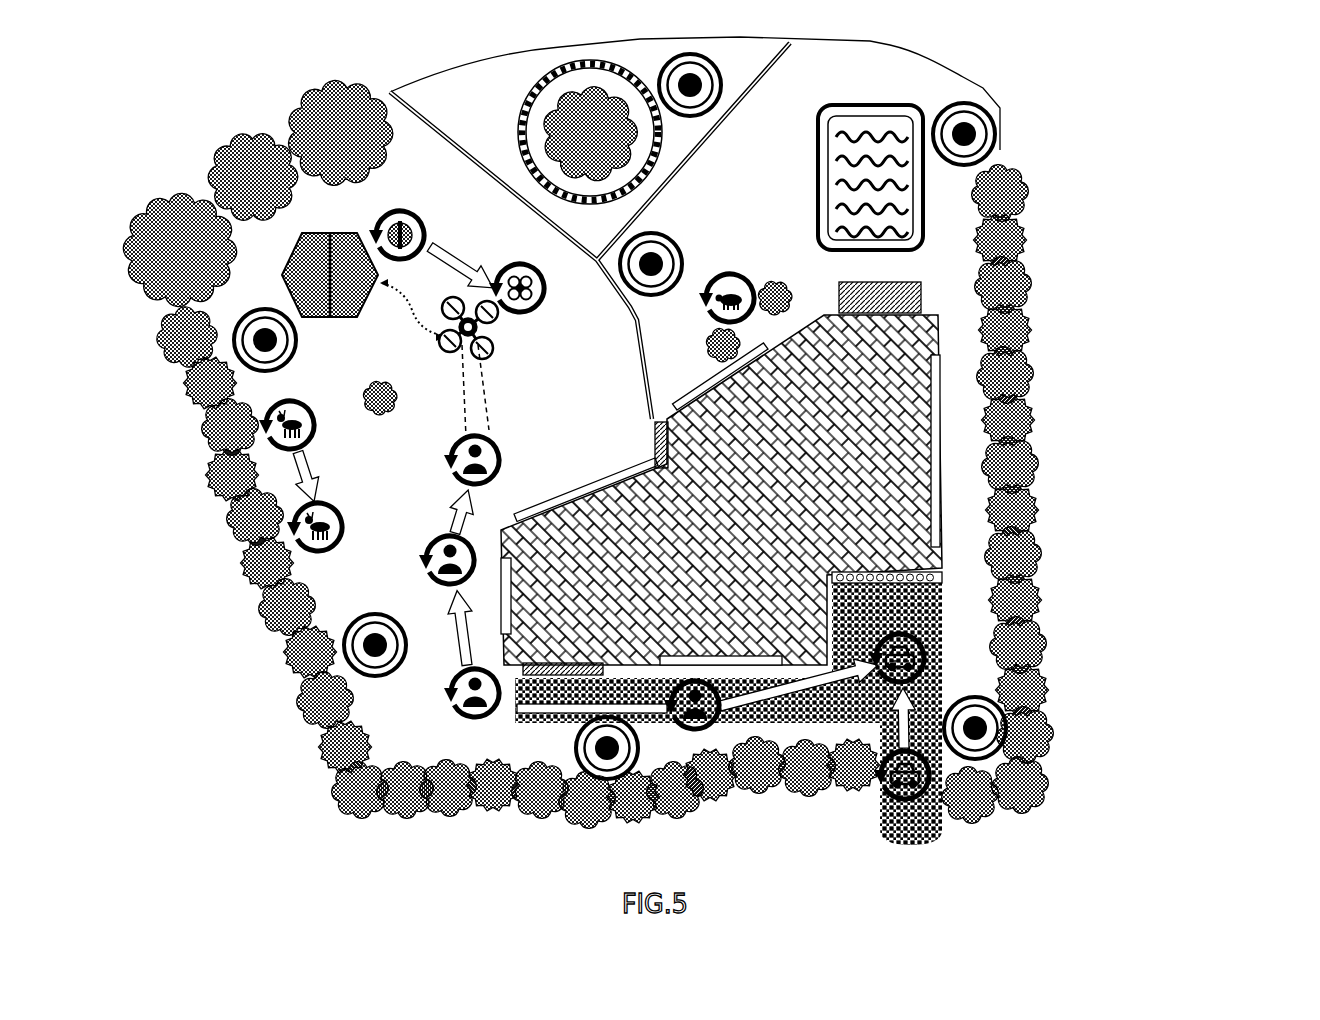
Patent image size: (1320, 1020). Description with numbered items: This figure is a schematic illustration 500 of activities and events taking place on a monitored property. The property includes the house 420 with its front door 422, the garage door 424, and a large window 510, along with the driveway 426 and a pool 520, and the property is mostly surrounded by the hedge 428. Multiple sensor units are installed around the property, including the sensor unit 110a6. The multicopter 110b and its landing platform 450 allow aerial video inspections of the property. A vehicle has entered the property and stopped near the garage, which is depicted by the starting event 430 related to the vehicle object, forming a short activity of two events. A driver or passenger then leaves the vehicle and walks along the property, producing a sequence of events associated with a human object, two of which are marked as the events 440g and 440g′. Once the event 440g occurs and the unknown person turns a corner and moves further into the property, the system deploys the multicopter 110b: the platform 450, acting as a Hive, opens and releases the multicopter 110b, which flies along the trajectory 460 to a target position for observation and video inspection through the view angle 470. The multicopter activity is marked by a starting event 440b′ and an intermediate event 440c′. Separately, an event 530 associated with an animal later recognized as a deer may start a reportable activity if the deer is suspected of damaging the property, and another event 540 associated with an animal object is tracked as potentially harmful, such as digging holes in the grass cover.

The schematic illustration 500 is at (1303, 97).
The landing platform 450 is at (242, 160).
The hedge 428 is at (210, 478).
The front door 422 is at (565, 668).
The house 420 is at (940, 333).
The large window 510 is at (944, 453).
The pool 520 is at (960, 87).
The garage door 424 is at (945, 576).
The driveway 426 is at (943, 828).
The starting event 430 is at (883, 798).
The trajectory 460 is at (395, 316).
The view angle 470 is at (485, 412).
The multicopter 110b is at (505, 350).
The sensor unit 110a6 is at (996, 128).
The starting event 440b′ is at (398, 208).
The intermediate event 440c′ is at (537, 262).
The event 440g′ is at (455, 450).
The event 440g is at (450, 690).
The event 530 is at (325, 503).
The event 540 is at (740, 289).